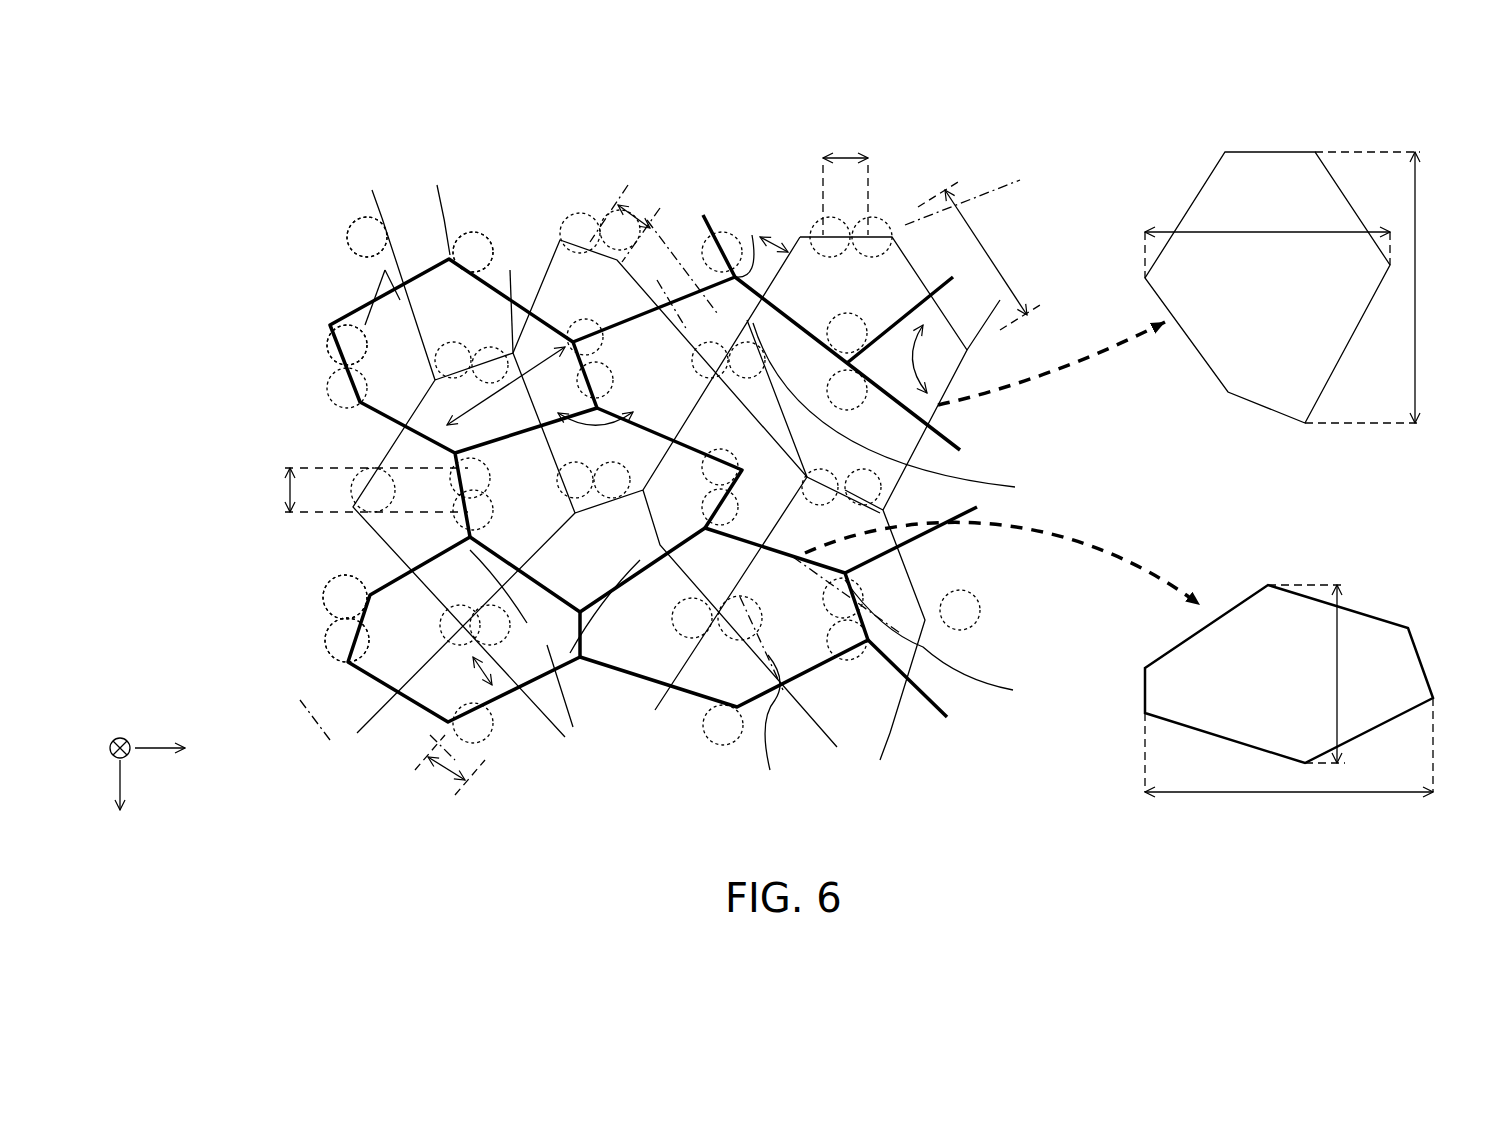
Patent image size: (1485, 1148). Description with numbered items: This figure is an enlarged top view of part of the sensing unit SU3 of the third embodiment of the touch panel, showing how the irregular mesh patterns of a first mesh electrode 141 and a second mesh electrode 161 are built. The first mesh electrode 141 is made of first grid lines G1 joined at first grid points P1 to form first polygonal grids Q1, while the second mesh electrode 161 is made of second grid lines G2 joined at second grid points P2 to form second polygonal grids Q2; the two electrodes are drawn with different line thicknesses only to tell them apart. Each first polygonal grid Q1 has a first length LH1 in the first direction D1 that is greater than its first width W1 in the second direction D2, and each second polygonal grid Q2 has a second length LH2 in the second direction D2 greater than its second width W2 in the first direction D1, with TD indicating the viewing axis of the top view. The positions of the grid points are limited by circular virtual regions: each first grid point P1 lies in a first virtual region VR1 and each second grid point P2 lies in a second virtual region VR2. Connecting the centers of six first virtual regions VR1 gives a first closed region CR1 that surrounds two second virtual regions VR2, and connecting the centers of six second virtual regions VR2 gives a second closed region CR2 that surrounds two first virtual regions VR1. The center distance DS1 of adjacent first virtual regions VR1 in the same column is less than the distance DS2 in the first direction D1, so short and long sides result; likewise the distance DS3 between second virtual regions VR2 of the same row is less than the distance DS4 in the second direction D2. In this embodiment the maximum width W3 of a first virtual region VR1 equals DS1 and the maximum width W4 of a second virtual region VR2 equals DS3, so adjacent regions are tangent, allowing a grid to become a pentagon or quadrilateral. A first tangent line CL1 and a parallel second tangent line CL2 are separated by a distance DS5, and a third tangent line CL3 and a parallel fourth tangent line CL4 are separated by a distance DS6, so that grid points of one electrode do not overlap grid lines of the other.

The sensing unit SU3 is at (248, 150).
The second virtual region VR2 is at (360, 222).
The first mesh electrode 141 is at (513, 160).
The first grid point P1 is at (450, 255).
The first grid line G1 is at (510, 270).
The second mesh electrode 161 is at (262, 245).
The second grid line G2 is at (393, 270).
The second grid point P2 is at (435, 380).
The second polygonal grid Q2 is at (560, 235).
The first polygonal grid Q1 is at (662, 630).
The maximum width of second virtual region W4 is at (648, 201).
The fourth tangent line CL4 is at (752, 235).
The distance between fourth tangent and third tangent DS6 is at (770, 240).
The distance between center points of adjacent second virtual regions of the same ro DS3 is at (847, 181).
The distance between center points of adjacent second virtual regions in the second DS4 is at (981, 256).
The third tangent line CL3 is at (909, 412).
The distance between center points of adjacent first virtual regions in the first di DS2 is at (506, 391).
The distance between center points of adjacent first virtual regions of the same col DS1 is at (355, 490).
The first virtual region VR1 is at (325, 597).
The first closed region CR1 is at (517, 540).
The distance between second tangent line and first tangent line DS5 is at (461, 676).
The maximum width of first virtual region W3 is at (447, 769).
The second tangent line CL2 is at (527, 623).
The first tangent line CL1 is at (570, 653).
The second closed region CR2 is at (770, 577).
The second width W2 is at (1267, 287).
The second length LH2 is at (1386, 287).
The first width W1 is at (1289, 674).
The first length LH1 is at (1289, 763).
The thickness direction TD is at (114, 732).
The first direction D1 is at (182, 747).
The second direction D2 is at (120, 803).